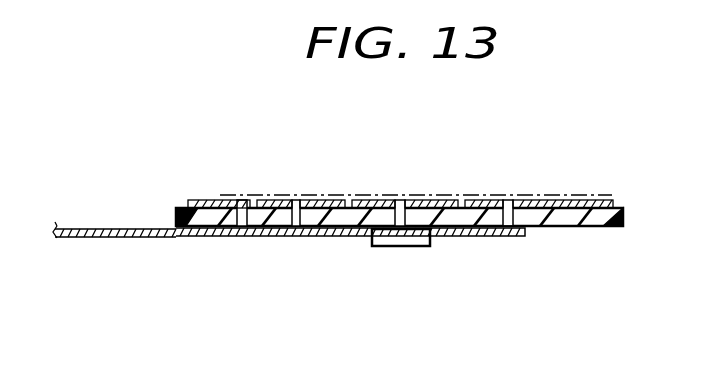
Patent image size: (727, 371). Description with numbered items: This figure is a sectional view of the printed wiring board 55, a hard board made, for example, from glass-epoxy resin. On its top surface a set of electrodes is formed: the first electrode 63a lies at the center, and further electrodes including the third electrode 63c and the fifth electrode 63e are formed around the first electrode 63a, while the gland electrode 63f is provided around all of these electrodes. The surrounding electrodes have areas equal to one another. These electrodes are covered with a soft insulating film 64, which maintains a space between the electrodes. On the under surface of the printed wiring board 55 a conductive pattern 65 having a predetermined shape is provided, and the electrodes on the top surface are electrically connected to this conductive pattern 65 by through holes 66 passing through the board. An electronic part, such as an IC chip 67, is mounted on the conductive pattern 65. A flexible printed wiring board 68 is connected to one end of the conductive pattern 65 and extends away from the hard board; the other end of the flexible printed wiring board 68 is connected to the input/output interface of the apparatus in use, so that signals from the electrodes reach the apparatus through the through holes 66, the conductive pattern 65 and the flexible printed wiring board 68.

The printed wiring board 55 is at (592, 217).
The first electrode 63a is at (402, 200).
The third electrode 63c is at (293, 205).
The fifth electrode 63e is at (517, 202).
The gland electrode 63f is at (215, 203).
The soft insulating film 64 is at (466, 195).
The conductive pattern 65 is at (472, 230).
The through holes 66 is at (292, 238).
The IC chip 67 is at (387, 240).
The flexible printed wiring board 68 is at (104, 238).